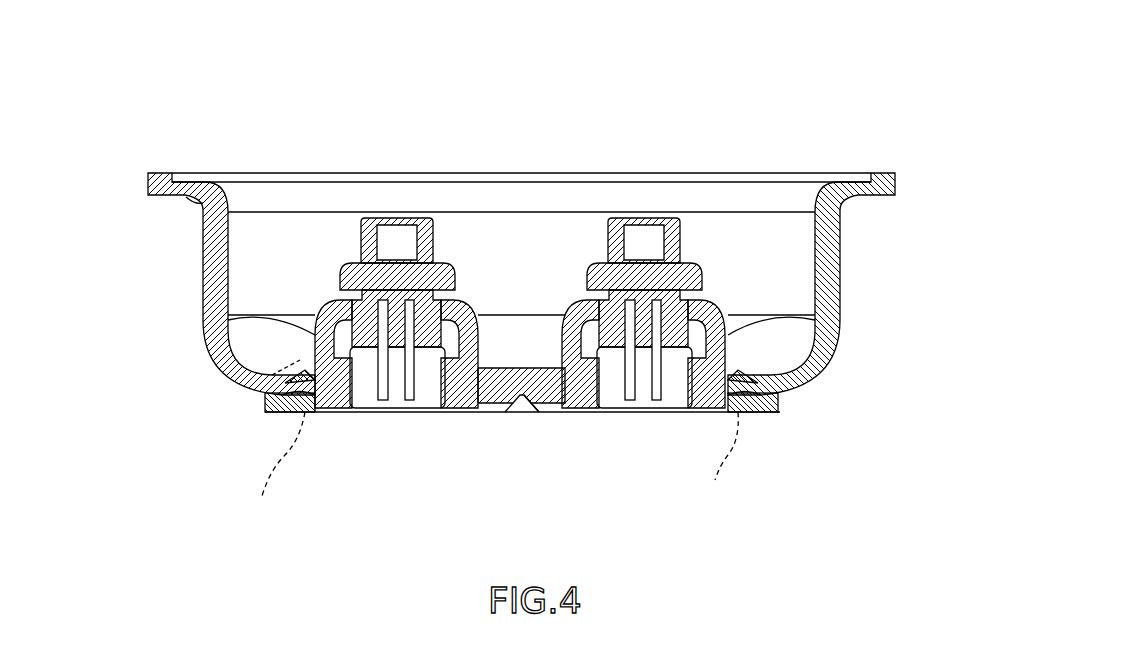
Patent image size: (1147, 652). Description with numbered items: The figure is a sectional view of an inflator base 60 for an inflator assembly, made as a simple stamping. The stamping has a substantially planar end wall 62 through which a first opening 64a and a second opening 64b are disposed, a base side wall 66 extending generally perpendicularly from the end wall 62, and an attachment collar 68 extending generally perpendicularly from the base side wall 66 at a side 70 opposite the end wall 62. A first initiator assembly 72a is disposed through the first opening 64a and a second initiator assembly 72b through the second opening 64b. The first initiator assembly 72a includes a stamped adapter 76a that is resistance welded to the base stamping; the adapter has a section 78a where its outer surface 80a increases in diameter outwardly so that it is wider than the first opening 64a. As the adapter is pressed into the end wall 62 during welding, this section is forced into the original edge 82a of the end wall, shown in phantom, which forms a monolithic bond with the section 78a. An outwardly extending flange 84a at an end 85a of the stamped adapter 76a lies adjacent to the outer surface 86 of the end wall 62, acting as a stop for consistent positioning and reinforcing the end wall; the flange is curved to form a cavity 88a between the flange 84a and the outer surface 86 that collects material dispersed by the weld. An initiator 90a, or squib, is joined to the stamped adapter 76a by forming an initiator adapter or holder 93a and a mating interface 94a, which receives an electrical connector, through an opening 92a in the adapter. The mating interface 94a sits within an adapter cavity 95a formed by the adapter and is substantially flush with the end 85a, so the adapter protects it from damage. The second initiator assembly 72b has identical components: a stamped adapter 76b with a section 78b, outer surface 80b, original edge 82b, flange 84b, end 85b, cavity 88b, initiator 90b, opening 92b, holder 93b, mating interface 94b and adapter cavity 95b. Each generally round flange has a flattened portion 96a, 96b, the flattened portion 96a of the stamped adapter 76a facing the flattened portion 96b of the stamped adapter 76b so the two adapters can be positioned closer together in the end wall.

The inflator base 60 is at (733, 85).
The end wall 62 is at (228, 342).
The first opening 64a is at (268, 398).
The second opening 64b is at (772, 395).
The base side wall 66 is at (203, 250).
The attachment collar 68 is at (150, 183).
The side 70 is at (190, 200).
The first initiator assembly 72a is at (325, 300).
The second initiator assembly 72b is at (572, 300).
The stamped adapter 76a is at (322, 300).
The stamped adapter 76b is at (552, 300).
The section 78a is at (453, 412).
The section 78b is at (596, 412).
The outer surface 80a is at (228, 292).
The outer surface 80b is at (770, 290).
The original edge 82a is at (262, 469).
The original edge 82b is at (717, 457).
The outwardly extending flange 84a is at (275, 403).
The outwardly extending flange 84b is at (768, 405).
The end 85a is at (485, 412).
The end 85b is at (752, 412).
The outer surface 86 is at (235, 372).
The cavity 88a is at (285, 412).
The cavity 88b is at (765, 412).
The initiator 90a is at (368, 222).
The initiator 90b is at (636, 222).
The opening 92a is at (348, 270).
The opening 92b is at (598, 268).
The initiator adapter or holder 93a is at (413, 310).
The initiator adapter or holder 93b is at (630, 300).
The mating interface 94a is at (330, 412).
The mating interface 94b is at (698, 412).
The adapter cavity 95a is at (318, 412).
The adapter cavity 95b is at (563, 412).
The flattened portion 96a is at (512, 412).
The flattened portion 96b is at (532, 412).